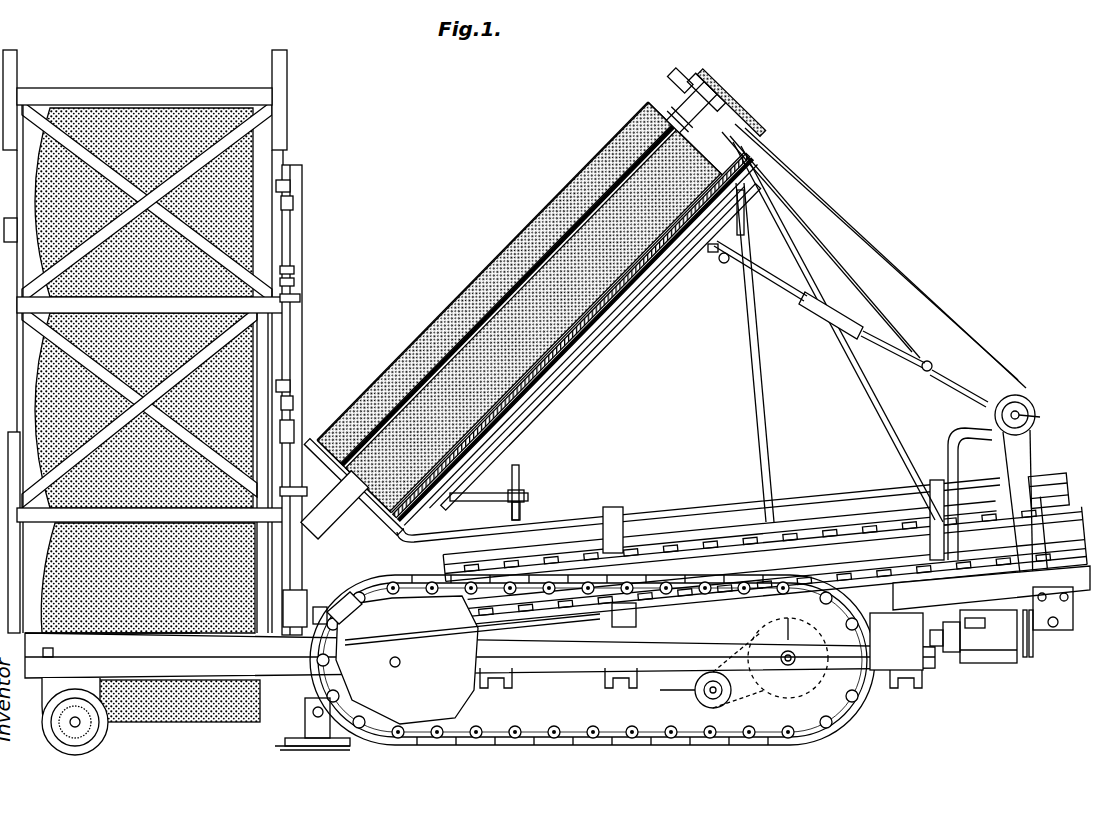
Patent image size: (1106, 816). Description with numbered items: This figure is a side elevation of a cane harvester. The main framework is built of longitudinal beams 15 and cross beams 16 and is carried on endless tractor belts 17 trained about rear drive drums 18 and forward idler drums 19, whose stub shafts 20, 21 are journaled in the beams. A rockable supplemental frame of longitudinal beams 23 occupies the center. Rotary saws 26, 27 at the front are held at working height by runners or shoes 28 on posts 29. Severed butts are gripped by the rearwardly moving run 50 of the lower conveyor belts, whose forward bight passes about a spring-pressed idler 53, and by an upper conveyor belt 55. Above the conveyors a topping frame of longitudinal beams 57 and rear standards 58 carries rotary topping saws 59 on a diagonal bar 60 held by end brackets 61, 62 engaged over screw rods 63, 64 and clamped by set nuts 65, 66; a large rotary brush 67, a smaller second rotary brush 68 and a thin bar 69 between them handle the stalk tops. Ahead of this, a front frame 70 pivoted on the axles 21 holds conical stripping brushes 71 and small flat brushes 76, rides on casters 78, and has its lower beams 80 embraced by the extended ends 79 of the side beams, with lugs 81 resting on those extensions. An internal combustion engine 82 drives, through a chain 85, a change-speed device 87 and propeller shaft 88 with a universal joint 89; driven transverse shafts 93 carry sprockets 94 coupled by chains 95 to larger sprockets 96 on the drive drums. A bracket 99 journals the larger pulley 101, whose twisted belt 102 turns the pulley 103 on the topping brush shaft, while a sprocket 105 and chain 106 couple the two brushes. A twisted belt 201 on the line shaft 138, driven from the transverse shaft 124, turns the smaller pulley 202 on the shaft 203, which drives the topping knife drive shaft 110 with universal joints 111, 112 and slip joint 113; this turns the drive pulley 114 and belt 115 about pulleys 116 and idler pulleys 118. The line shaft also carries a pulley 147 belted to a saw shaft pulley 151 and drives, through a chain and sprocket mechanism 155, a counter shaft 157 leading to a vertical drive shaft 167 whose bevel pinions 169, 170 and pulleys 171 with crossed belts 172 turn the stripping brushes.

The longitudinal beams 15 is at (598, 665).
The cross beams 16 is at (497, 681).
The endless tractor belts 17 is at (590, 733).
The rear drive drums 18 is at (856, 700).
The forward idler drums 19 is at (407, 660).
The shaft 20 is at (788, 658).
The shaft 21 is at (402, 662).
The longitudinal beams 23 is at (570, 660).
The rotary saw 26 is at (270, 742).
The rotary saw 27 is at (280, 749).
The runners or shoes 28 is at (285, 735).
The posts 29 is at (308, 712).
The rearwardly moving run of lower conveyor belt 50 is at (778, 582).
The spring-pressed idler 53 is at (353, 487).
The upper conveyor belt 55 is at (763, 544).
The longitudinal beams 57 is at (720, 541).
The rear standards 58 is at (845, 385).
The rotary topping saws 59 is at (601, 347).
The bar 60 is at (575, 339).
The end bracket 61 is at (530, 495).
The end bracket 62 is at (742, 262).
The screw rod 63 is at (525, 508).
The screw rod 64 is at (748, 323).
The set nut 65 is at (748, 210).
The set nut 66 is at (512, 502).
The rotary brush 67 is at (494, 282).
The second rotary brush 68 is at (507, 296).
The thin bar 69 is at (335, 505).
The frame 70 is at (133, 90).
The brushes 71 is at (147, 415).
The small flat brushes 76 is at (304, 320).
The casters 78 is at (110, 735).
The extended ends 79 is at (162, 660).
The lower beams 80 is at (112, 638).
The lugs 81 is at (63, 661).
The internal combustion engine 82 is at (740, 520).
The chain 85 is at (1035, 655).
The change-speed device 87 is at (992, 665).
The propeller shaft 88 is at (896, 641).
The universal joint 89 is at (950, 655).
The driven transverse shafts 93 is at (750, 706).
The sprockets 94 is at (665, 693).
The chains 95 is at (700, 700).
The larger sprockets 96 is at (781, 616).
The bracket 99 is at (970, 494).
The larger pulley 101 is at (1018, 396).
The twisted belt 102 is at (812, 197).
The pulley 103 is at (680, 80).
The sprocket 105 is at (731, 102).
The chain 106 is at (706, 92).
The rotary topping knife drive shaft 110 is at (897, 345).
The universal joint 111 is at (928, 372).
The universal joint 112 is at (722, 264).
The slip joint 113 is at (845, 312).
The drive pulley 114 is at (713, 254).
The belt 115 is at (586, 348).
The pulleys 116 is at (580, 345).
The idler pulleys 118 is at (571, 335).
The transverse shaft 124 is at (1058, 632).
The shaft 138 is at (991, 591).
The pulley 147 is at (347, 596).
The pulley 151 is at (320, 605).
The chain and sprocket mechanism 155 is at (578, 652).
The counter shaft 157 is at (620, 620).
The vertical drive shaft 167 is at (304, 300).
The bevel pinions 169 is at (304, 190).
The bevel pinions 170 is at (304, 206).
The pulleys 171 is at (304, 272).
The crossed belts 172 is at (304, 283).
The twisted belt 201 is at (1038, 470).
The smaller pulley 202 is at (1025, 400).
The shaft 203 is at (1049, 417).